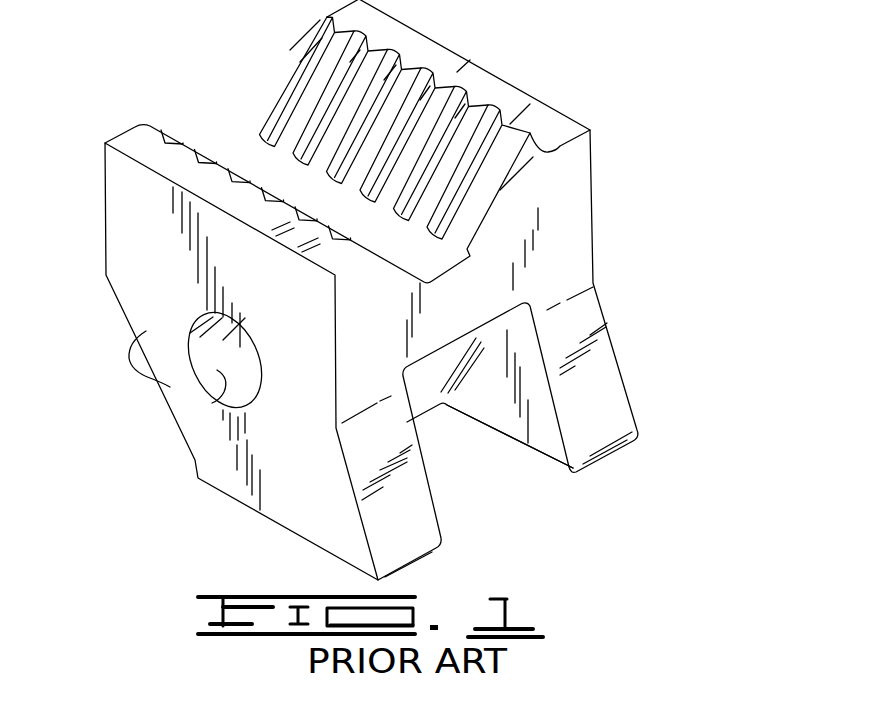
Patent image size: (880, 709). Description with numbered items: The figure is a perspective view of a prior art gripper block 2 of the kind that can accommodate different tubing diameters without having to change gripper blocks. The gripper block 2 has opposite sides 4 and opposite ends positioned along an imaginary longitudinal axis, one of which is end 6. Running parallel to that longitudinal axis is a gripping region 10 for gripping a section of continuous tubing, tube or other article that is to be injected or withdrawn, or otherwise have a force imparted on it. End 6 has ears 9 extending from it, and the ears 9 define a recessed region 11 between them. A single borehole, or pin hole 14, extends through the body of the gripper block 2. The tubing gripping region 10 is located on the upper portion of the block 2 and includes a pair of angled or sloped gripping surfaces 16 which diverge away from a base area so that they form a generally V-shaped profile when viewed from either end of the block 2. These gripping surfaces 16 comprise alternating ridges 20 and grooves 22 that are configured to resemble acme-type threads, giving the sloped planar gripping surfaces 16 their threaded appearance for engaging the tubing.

The gripper block 2 is at (632, 90).
The sides 4 is at (153, 302).
The end 6 is at (483, 307).
The ears 9 is at (610, 392).
The gripping region 10 is at (246, 176).
The recessed region 11 is at (467, 457).
The pin hole 14 is at (218, 371).
The sloped gripping surfaces 16 is at (307, 75).
The ridges 20 is at (393, 80).
The grooves 22 is at (471, 93).